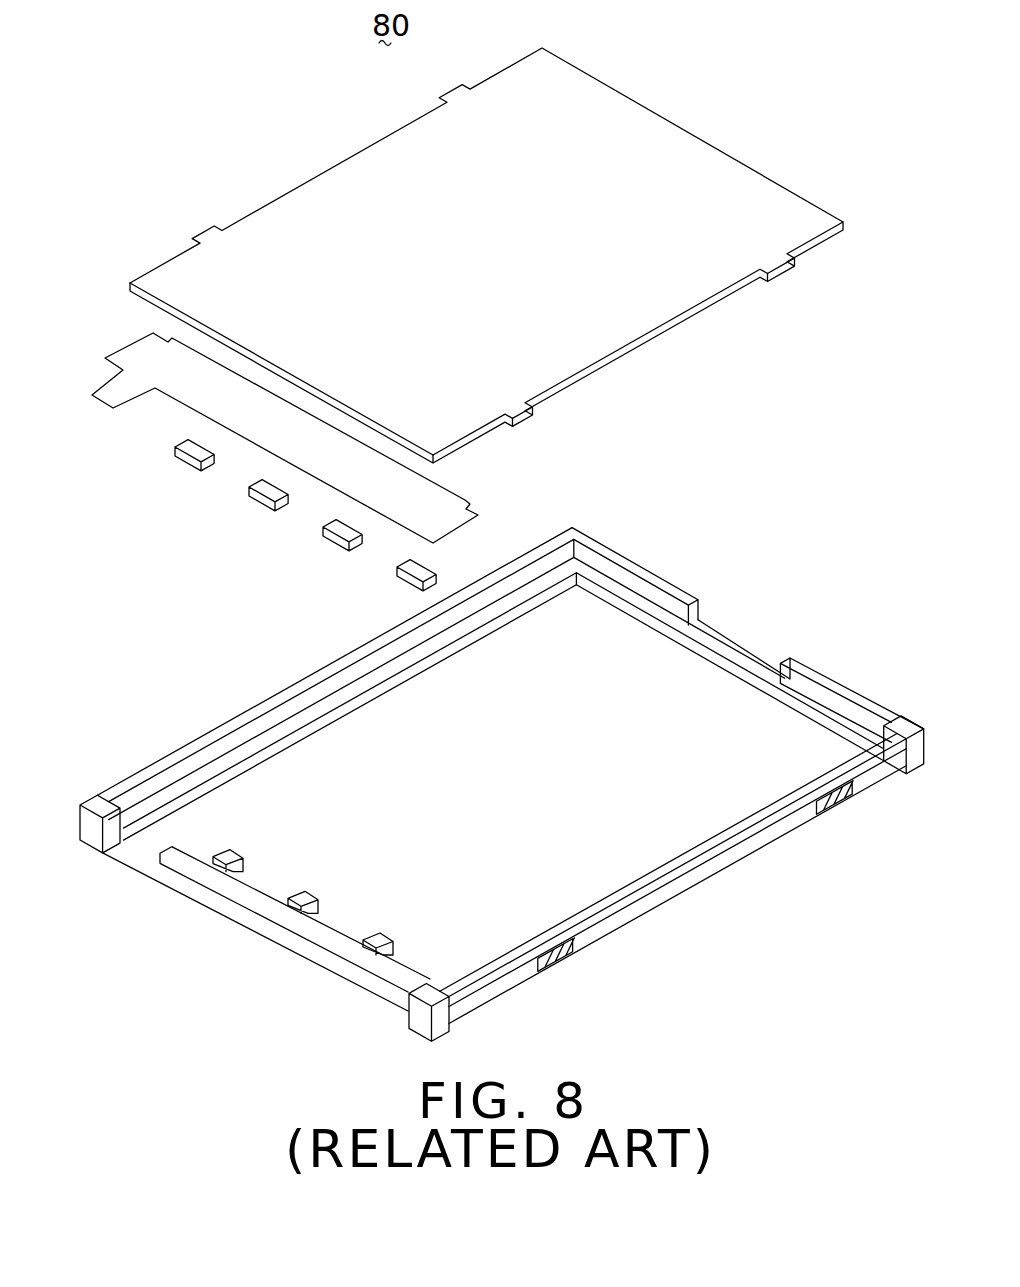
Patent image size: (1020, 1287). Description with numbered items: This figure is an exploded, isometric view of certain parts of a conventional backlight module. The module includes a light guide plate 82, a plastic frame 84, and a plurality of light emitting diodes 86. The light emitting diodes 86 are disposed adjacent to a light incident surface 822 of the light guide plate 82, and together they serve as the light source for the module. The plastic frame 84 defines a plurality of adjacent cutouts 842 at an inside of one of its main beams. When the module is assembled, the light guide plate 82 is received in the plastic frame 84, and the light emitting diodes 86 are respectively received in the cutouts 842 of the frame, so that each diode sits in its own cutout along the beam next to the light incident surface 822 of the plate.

The light guide plate 82 is at (754, 157).
The light incident surface 822 is at (147, 293).
The plastic frame 84 is at (697, 581).
The cutouts 842 is at (185, 832).
The light emitting diodes 86 is at (195, 450).